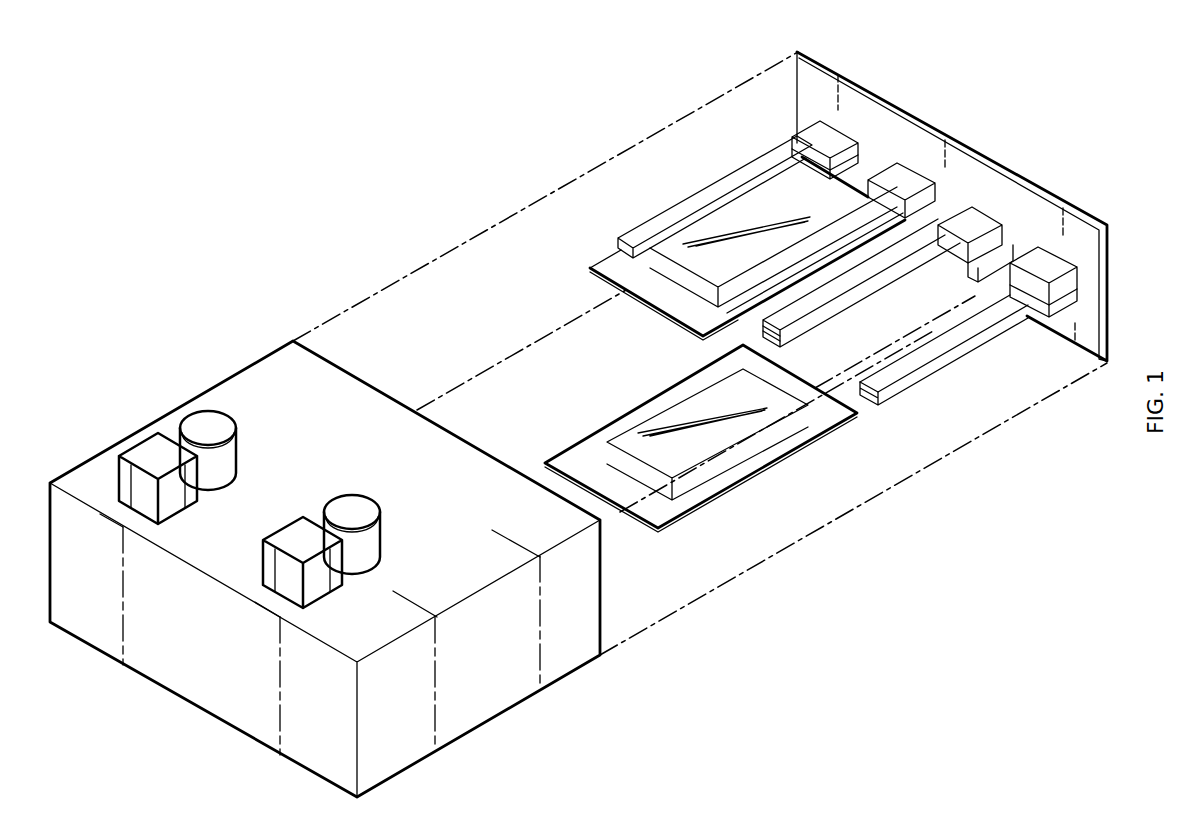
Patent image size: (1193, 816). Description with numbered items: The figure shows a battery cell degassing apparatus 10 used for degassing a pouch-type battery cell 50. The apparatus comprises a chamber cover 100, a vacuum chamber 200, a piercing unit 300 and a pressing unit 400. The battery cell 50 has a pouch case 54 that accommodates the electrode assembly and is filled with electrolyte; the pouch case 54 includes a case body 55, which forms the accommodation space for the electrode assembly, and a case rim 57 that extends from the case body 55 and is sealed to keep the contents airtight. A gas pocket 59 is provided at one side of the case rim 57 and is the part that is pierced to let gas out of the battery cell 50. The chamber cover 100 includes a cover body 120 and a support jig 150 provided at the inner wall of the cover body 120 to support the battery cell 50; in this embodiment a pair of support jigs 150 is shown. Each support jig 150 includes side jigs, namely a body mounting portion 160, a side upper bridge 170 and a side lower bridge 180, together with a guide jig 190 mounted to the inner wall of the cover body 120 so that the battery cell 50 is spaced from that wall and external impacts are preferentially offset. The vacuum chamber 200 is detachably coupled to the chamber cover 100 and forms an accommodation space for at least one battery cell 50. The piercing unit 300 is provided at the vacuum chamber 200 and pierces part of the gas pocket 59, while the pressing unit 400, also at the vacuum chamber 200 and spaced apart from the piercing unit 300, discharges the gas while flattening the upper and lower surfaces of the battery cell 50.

The battery cell degassing apparatus 10 is at (295, 150).
The battery cell 50 is at (742, 205).
The pouch case 54 is at (660, 347).
The case body 55 is at (670, 412).
The case rim 57 is at (631, 418).
The gas pocket 59 is at (574, 461).
The chamber cover 100 is at (705, 95).
The cover body 120 is at (829, 72).
The support jig 150 is at (876, 138).
The body mounting portion 160 is at (967, 222).
The side upper bridge 170 is at (937, 347).
The side lower bridge 180 is at (923, 373).
The guide jig 190 is at (997, 253).
The vacuum chamber 200 is at (223, 347).
The piercing unit 300 is at (132, 447).
The pressing unit 400 is at (179, 414).